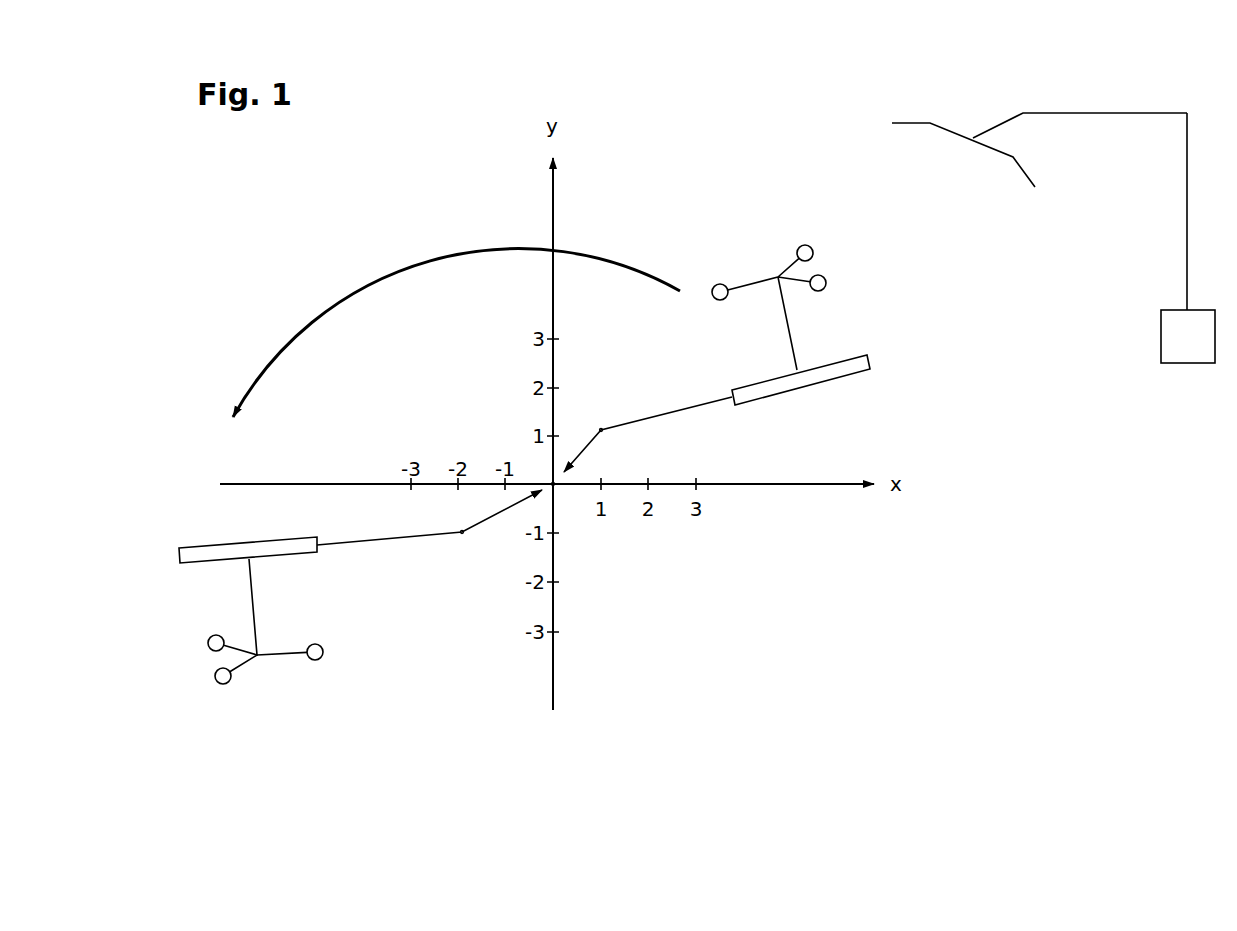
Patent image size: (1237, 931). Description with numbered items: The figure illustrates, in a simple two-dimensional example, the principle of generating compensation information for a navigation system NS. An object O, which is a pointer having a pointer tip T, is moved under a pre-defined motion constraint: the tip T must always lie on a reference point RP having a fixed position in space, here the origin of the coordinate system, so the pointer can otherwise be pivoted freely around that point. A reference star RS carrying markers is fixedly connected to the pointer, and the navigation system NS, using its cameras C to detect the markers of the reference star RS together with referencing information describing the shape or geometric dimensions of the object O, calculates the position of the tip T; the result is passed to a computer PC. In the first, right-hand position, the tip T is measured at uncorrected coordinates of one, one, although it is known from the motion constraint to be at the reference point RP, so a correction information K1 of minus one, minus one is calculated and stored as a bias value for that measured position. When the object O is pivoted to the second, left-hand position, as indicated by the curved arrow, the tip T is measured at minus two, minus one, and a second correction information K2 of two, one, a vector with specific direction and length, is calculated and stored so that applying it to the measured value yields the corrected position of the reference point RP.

The camera C is at (974, 122).
The navigation system NS is at (1117, 233).
The computer PC is at (1188, 336).
The reference star RS is at (787, 316).
The object O is at (826, 398).
The pointer tip T is at (600, 412).
The correction information K1 is at (580, 457).
The second correction information K2 is at (482, 512).
The reference point RP is at (571, 501).